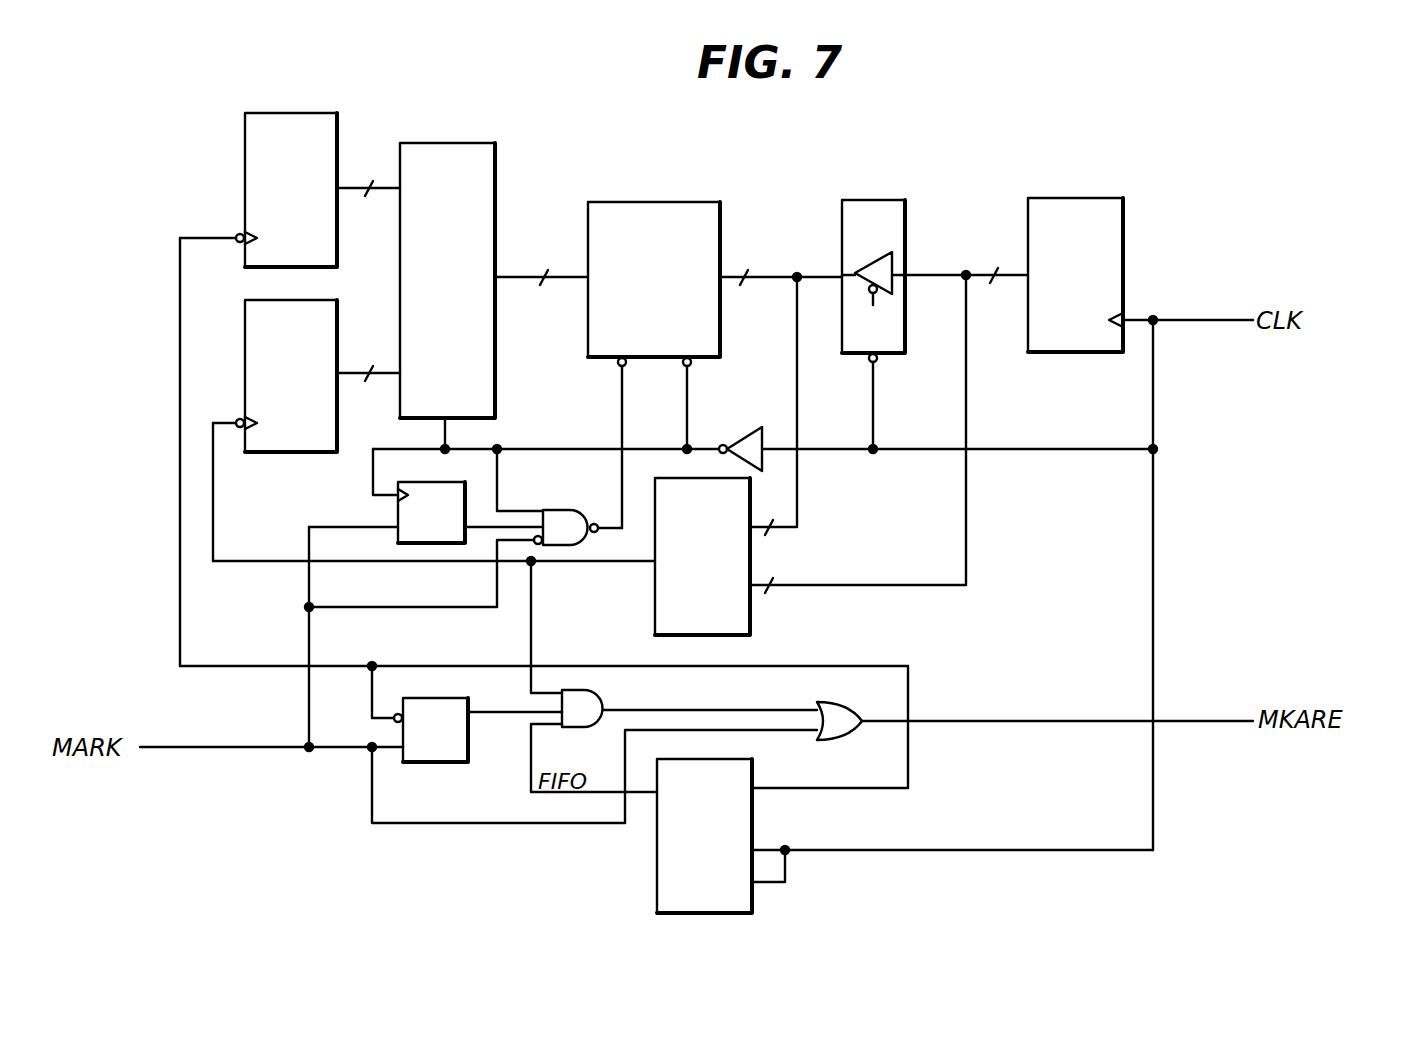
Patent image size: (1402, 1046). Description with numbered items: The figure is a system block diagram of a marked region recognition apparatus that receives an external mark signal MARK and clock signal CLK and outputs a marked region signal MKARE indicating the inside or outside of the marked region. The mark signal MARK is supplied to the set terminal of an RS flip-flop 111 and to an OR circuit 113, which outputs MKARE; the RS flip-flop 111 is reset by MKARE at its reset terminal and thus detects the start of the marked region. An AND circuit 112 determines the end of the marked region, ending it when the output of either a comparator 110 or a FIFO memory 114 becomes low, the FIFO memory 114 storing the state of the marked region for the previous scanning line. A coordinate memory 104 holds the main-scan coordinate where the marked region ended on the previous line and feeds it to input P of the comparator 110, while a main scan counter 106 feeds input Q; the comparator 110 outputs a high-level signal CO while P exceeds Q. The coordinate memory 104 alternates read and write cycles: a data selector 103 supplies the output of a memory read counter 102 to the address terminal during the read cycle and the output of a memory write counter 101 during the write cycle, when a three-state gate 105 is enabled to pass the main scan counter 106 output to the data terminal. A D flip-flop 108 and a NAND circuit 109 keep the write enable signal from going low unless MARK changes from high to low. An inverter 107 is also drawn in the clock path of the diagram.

The memory write counter 101 is at (337, 113).
The memory read counter 102 is at (337, 301).
The data selector 103 is at (495, 143).
The coordinate memory 104 is at (720, 202).
The 3-state gate 105 is at (905, 200).
The main scan counter 106 is at (1123, 198).
The inverter 107 is at (748, 430).
The D flip-flop 108 is at (432, 486).
The NAND circuit 109 is at (572, 510).
The comparator 110 is at (670, 480).
The RS flip-flop 111 is at (465, 699).
The AND circuit 112 is at (603, 705).
The OR circuit 113 is at (835, 702).
The FIFO memory 114 is at (752, 763).